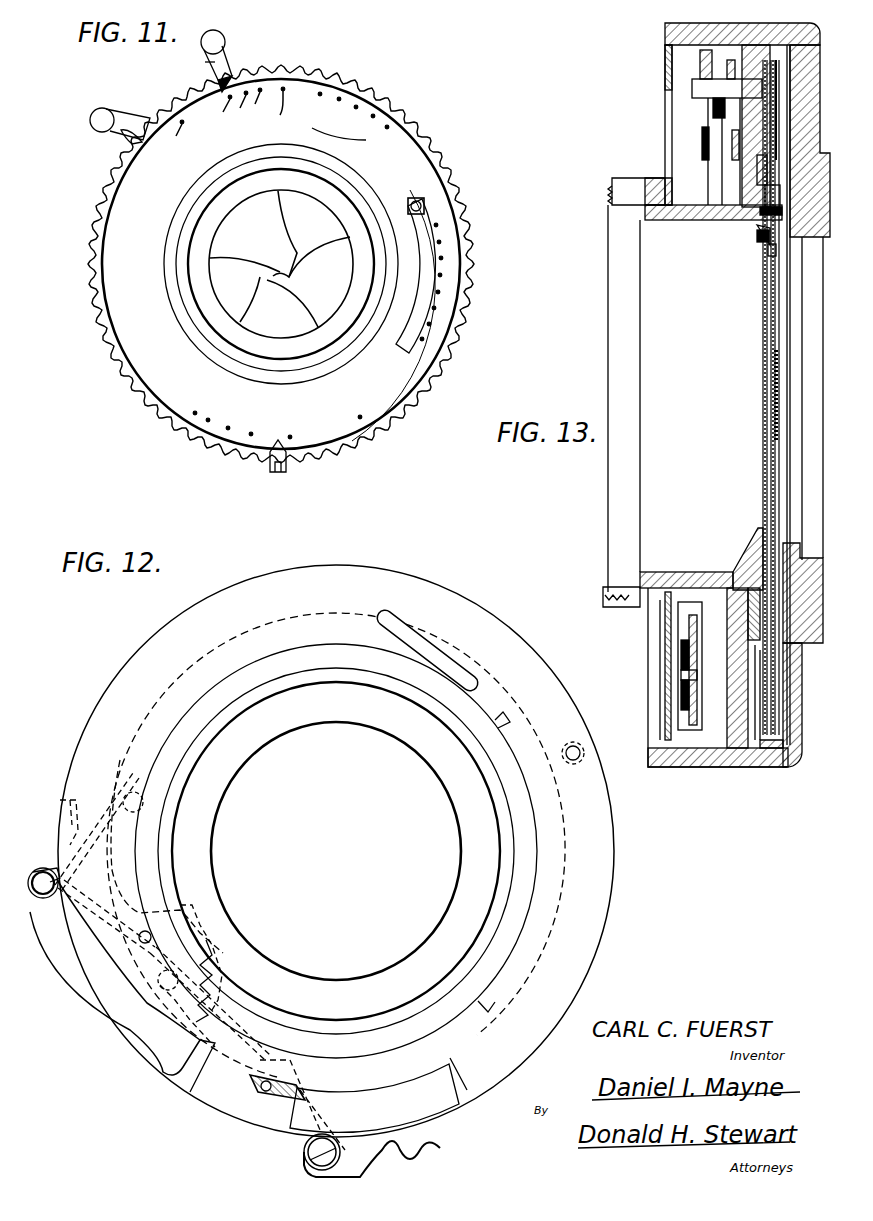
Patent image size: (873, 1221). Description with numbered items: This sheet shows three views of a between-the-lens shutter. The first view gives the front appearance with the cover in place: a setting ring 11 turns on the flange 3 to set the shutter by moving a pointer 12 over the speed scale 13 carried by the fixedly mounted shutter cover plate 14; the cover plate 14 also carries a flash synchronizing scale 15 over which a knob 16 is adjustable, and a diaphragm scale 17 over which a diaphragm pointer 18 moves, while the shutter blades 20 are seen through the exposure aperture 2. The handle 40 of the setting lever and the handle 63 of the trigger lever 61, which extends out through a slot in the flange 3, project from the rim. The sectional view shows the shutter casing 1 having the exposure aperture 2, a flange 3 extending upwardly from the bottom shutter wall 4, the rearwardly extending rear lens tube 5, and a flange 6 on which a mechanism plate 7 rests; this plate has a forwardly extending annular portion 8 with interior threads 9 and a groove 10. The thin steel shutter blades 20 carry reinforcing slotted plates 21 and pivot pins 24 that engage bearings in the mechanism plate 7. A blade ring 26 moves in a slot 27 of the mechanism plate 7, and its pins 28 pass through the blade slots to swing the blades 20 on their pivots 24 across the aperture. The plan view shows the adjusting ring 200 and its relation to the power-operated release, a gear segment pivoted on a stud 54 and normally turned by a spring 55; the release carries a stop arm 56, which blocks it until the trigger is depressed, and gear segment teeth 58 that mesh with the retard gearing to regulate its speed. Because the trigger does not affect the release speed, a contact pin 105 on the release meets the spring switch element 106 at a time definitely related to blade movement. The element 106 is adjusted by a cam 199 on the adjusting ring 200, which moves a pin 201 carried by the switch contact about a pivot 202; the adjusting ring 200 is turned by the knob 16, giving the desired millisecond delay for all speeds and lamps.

In FIG. 13, the shutter casing 1 is at (800, 96).
In FIG. 11, the exposure aperture 2 is at (256, 208).
In FIG. 13, the exposure aperture 2 is at (763, 380).
In FIG. 12, the exposure aperture 2 is at (332, 722).
In FIG. 13, the flange 3 is at (702, 768).
In FIG. 13, the bottom shutter wall 4 is at (795, 700).
In FIG. 13, the rear lens tube 5 is at (808, 560).
In FIG. 13, the flange 6 is at (770, 765).
In FIG. 13, the mechanism plate 7 is at (738, 748).
In FIG. 13, the annular portion 8 is at (690, 572).
In FIG. 12, the annular portion 8 is at (477, 757).
In FIG. 13, the interior threads 9 is at (618, 590).
In FIG. 13, the groove 10 is at (618, 608).
In FIG. 11, the setting ring 11 is at (450, 168).
In FIG. 11, the pointer 12 is at (225, 57).
In FIG. 11, the speed scale 13 is at (271, 124).
In FIG. 11, the shutter cover plate 14 is at (281, 264).
In FIG. 11, the flash synchronizing scale 15 is at (437, 288).
In FIG. 11, the knob 16 is at (425, 206).
In FIG. 12, the knob 16 is at (580, 746).
In FIG. 11, the diaphragm scale 17 is at (305, 368).
In FIG. 11, the diaphragm pointer 18 is at (273, 472).
In FIG. 11, the shutter blades 20 is at (281, 264).
In FIG. 13, the shutter blades 20 is at (768, 428).
In FIG. 13, the reinforcing slotted plates 21 is at (778, 148).
In FIG. 13, the pivot pin 24 is at (768, 252).
In FIG. 13, the blade ring 26 is at (758, 238).
In FIG. 13, the slot 27 is at (770, 218).
In FIG. 13, the pins 28 is at (765, 193).
In FIG. 11, the handle 40 is at (193, 61).
In FIG. 12, the stud 54 is at (43, 868).
In FIG. 12, the spring 55 is at (118, 915).
In FIG. 12, the stop arm 56 is at (65, 808).
In FIG. 12, the gear segment teeth 58 is at (222, 952).
In FIG. 11, the trigger lever 61 is at (124, 136).
In FIG. 11, the handle 63 is at (90, 118).
In FIG. 12, the contact pin 105 is at (160, 985).
In FIG. 12, the spring switch element 106 is at (208, 1000).
In FIG. 12, the cam 199 is at (320, 1088).
In FIG. 12, the adjusting ring 200 is at (598, 916).
In FIG. 12, the pin 201 is at (262, 1092).
In FIG. 12, the pivot 202 is at (306, 1160).